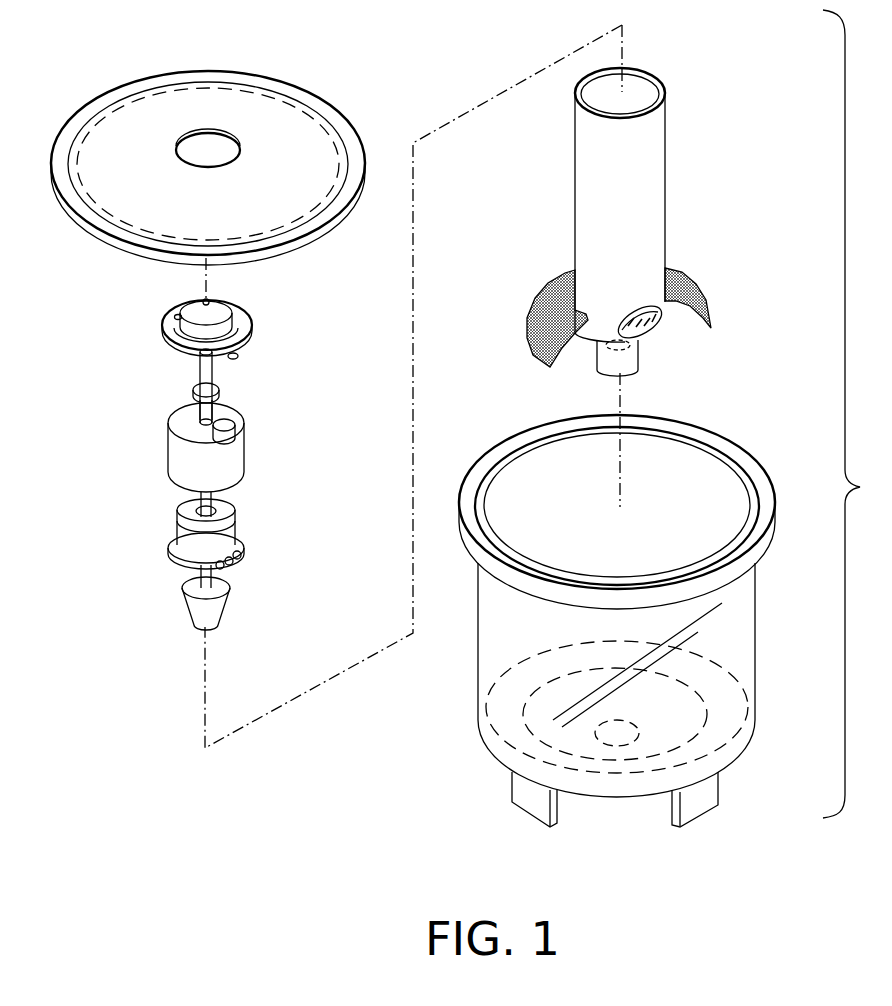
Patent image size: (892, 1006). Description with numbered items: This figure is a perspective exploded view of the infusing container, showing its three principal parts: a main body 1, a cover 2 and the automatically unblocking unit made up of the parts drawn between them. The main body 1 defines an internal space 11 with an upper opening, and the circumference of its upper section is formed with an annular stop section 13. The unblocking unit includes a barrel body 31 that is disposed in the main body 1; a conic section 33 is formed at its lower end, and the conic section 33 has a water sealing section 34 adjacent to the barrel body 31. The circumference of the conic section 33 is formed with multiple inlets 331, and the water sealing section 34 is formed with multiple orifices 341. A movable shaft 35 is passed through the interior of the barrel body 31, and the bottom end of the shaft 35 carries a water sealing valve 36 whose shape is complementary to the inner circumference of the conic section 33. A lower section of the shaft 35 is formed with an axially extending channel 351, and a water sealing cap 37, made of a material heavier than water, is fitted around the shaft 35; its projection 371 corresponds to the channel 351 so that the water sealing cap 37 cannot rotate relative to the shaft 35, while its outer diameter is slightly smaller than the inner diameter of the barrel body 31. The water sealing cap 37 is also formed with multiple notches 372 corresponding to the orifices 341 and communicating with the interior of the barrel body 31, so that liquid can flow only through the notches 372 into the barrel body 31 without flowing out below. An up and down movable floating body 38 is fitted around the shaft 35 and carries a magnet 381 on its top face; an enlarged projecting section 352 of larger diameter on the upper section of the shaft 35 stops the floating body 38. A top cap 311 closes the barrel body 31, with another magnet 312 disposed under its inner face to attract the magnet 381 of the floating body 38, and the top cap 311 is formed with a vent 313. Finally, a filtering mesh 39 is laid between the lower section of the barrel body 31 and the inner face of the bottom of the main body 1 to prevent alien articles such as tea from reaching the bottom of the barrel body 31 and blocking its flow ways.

The main body 1 is at (737, 673).
The internal space 11 is at (687, 483).
The annular stop section 13 is at (757, 565).
The cover 2 is at (258, 118).
The barrel body 31 is at (637, 185).
The top cap 311 is at (240, 306).
The magnet 312 is at (235, 356).
The vent 313 is at (178, 306).
The conic section 33 is at (600, 348).
The inlet 331 is at (620, 343).
The water sealing section 34 is at (660, 330).
The orifice 341 is at (648, 340).
The movable shaft 35 is at (203, 378).
The channel 351 is at (215, 507).
The enlarged projecting section 352 is at (193, 394).
The water sealing valve 36 is at (212, 618).
The water sealing cap 37 is at (228, 530).
The projection 371 is at (192, 516).
The notch 372 is at (240, 554).
The floating body 38 is at (213, 463).
The magnet 381 is at (240, 419).
The filtering mesh 39 is at (695, 298).